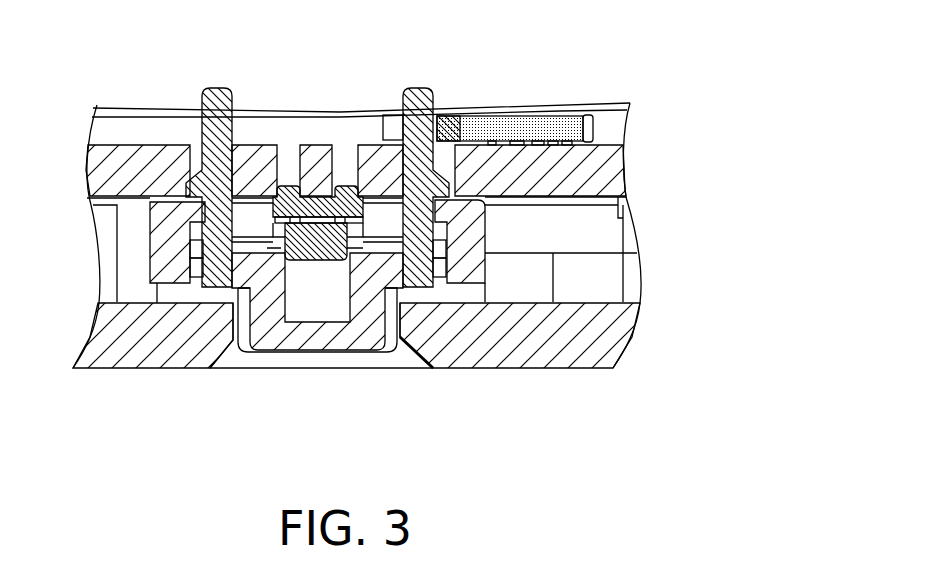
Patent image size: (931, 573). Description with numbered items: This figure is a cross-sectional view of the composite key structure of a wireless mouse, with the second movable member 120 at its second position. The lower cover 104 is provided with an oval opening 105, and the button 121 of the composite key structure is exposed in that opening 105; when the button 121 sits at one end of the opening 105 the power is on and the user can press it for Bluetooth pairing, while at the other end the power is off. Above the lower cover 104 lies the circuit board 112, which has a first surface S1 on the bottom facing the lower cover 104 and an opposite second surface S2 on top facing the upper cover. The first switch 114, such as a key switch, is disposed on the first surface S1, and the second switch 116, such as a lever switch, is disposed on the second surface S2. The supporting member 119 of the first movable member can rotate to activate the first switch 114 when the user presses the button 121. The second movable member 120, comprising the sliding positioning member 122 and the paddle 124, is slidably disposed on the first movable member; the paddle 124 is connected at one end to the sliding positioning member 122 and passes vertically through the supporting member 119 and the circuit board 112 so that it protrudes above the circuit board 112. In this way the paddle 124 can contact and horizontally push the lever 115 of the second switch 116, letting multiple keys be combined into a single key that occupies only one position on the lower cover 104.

The lower cover 104 is at (100, 347).
The opening 105 is at (368, 372).
The circuit board 112 is at (603, 142).
The first switch 114 is at (415, 345).
The lever 115 is at (383, 115).
The second switch 116 is at (483, 128).
The supporting member 119 is at (167, 258).
The second movable member 120 is at (250, 378).
The button 121 is at (333, 352).
The sliding positioning member 122 is at (193, 178).
The paddle 124 is at (215, 88).
The first surface S1 is at (130, 200).
The second surface S2 is at (258, 142).